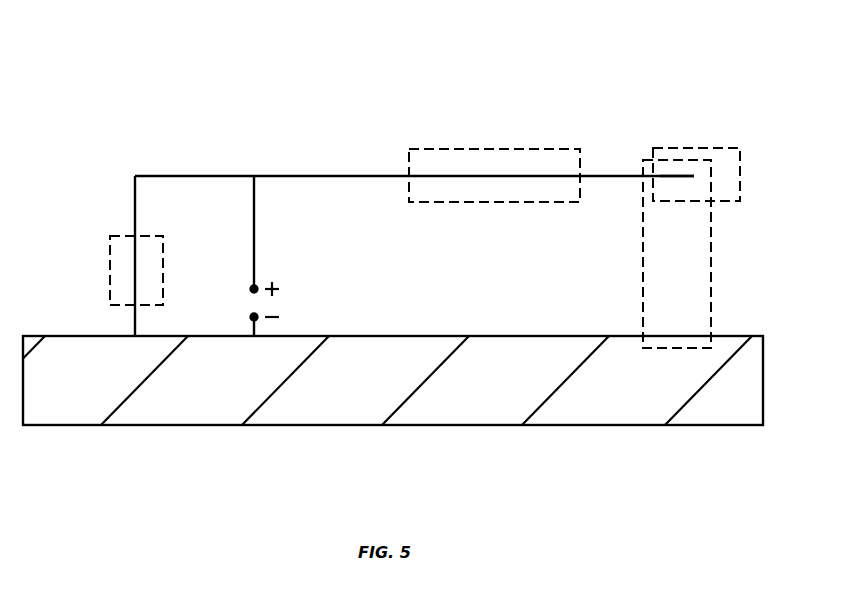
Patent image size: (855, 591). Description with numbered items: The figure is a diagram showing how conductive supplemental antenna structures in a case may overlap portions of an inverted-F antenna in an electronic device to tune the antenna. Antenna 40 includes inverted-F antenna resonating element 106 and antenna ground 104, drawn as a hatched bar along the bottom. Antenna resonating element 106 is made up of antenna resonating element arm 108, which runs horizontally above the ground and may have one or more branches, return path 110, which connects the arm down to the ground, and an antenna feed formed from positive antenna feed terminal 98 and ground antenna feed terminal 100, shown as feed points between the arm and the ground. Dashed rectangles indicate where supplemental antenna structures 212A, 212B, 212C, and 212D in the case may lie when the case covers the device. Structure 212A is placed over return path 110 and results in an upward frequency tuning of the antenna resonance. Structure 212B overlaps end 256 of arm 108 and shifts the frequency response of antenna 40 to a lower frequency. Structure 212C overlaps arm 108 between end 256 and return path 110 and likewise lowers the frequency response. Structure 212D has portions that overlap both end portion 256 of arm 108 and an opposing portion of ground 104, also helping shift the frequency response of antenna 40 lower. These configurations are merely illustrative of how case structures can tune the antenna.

The antenna 40 is at (745, 77).
The positive antenna feed terminal 98 is at (256, 287).
The ground antenna feed terminal 100 is at (256, 315).
The antenna ground 104 is at (450, 408).
The inverted-F antenna resonating element 106 is at (53, 177).
The antenna resonating element arm 108 is at (337, 176).
The return path 110 is at (135, 200).
The supplemental antenna structure 212A is at (163, 246).
The supplemental antenna structure 212B is at (740, 163).
The supplemental antenna structure 212C is at (462, 149).
The supplemental antenna structure 212D is at (711, 243).
The end of antenna resonating element arm 256 is at (683, 175).